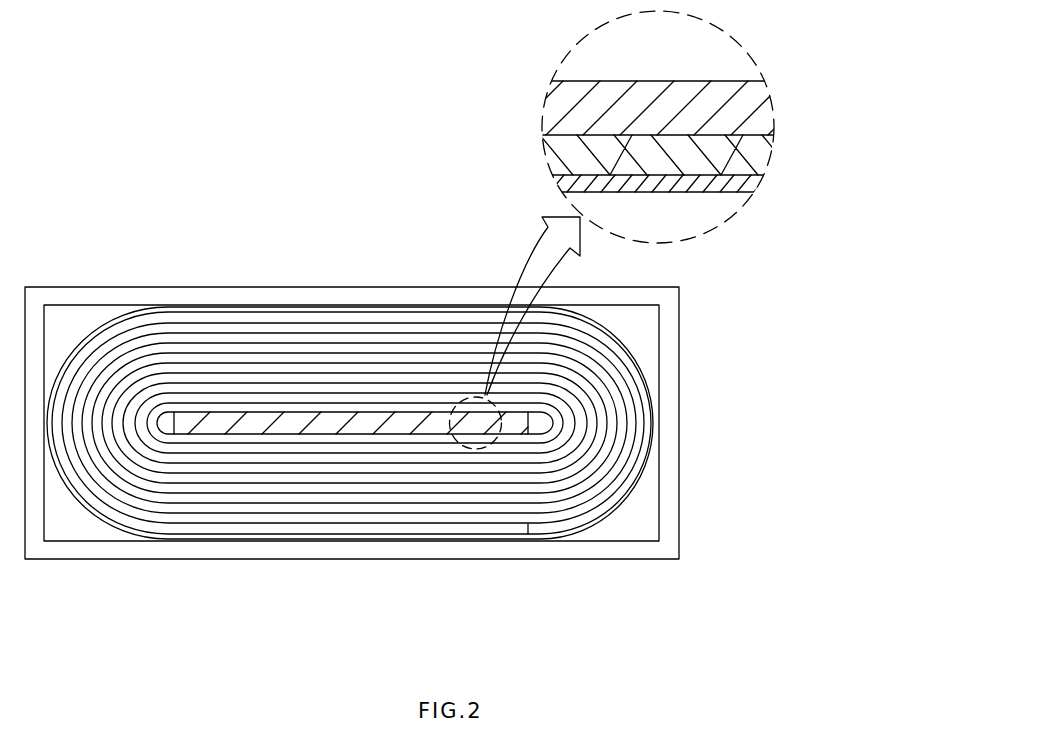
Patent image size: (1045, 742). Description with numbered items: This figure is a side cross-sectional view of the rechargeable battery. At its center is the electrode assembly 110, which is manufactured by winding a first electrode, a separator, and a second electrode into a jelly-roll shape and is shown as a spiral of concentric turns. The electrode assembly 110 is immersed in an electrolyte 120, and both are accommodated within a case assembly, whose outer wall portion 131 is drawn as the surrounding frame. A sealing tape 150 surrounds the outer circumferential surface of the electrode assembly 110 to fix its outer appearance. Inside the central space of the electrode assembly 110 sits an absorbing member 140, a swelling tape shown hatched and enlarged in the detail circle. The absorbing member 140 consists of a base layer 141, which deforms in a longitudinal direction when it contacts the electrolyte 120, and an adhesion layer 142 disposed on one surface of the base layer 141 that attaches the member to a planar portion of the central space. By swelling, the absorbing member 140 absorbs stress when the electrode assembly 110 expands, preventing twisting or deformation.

The electrode assembly 110 is at (398, 376).
The electrolyte 120 is at (83, 312).
The outer frame 131 is at (670, 481).
The absorbing member 140 is at (541, 230).
The base layer 141 is at (762, 107).
The adhesion layer 142 is at (757, 155).
The sealing tape 150 is at (305, 310).